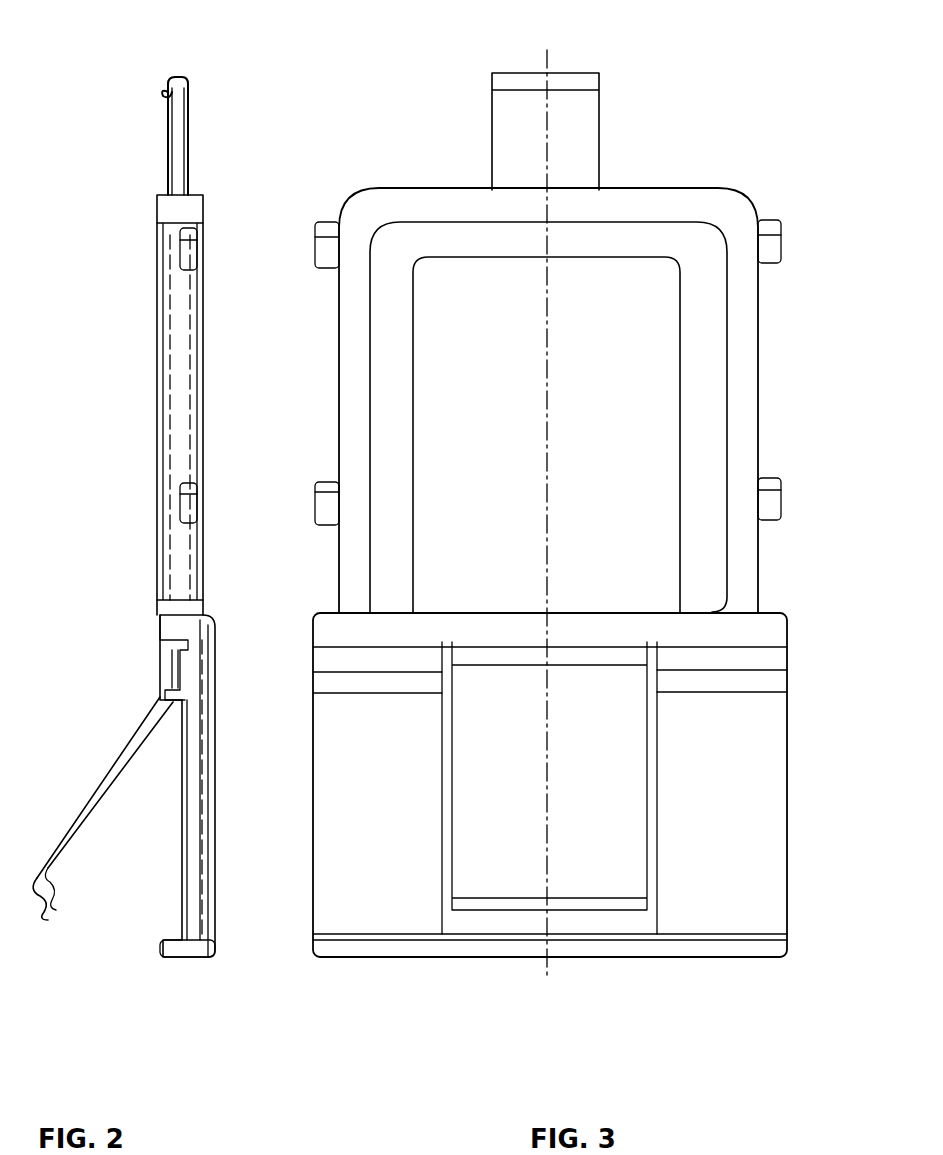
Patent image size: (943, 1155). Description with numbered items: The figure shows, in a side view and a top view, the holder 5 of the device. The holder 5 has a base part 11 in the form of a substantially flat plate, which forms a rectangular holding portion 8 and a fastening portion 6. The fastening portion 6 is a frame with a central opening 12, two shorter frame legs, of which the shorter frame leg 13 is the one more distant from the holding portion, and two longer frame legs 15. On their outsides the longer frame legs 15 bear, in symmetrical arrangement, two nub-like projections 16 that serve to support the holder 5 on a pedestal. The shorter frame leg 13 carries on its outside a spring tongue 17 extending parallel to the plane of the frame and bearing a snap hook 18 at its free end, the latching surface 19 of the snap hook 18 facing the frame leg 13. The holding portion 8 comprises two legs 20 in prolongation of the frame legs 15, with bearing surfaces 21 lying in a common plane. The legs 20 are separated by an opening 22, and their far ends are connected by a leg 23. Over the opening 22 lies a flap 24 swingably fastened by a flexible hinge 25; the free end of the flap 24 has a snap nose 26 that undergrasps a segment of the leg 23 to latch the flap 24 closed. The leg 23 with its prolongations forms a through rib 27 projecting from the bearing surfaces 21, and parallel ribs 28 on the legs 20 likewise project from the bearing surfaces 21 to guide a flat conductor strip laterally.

In FIG. 3, the holder 5 is at (559, 540).
In FIG. 2, the fastening portion 6 is at (157, 366).
In FIG. 3, the fastening portion 6 is at (762, 380).
In FIG. 2, the holding portion 8 is at (216, 890).
In FIG. 3, the holding portion 8 is at (790, 840).
In FIG. 2, the base part 11 is at (203, 572).
In FIG. 3, the base part 11 is at (758, 600).
In FIG. 3, the central opening 12 is at (450, 312).
In FIG. 3, the shorter frame leg 13 is at (647, 200).
In FIG. 3, the longer frame legs 15 is at (360, 382).
In FIG. 2, the nub-like projections 16 is at (182, 246).
In FIG. 3, the nub-like projections 16 is at (315, 240).
In FIG. 2, the spring tongue 17 is at (188, 122).
In FIG. 3, the spring tongue 17 is at (508, 150).
In FIG. 2, the snap hook 18 is at (170, 72).
In FIG. 3, the snap hook 18 is at (527, 72).
In FIG. 2, the latching surface 19 is at (166, 94).
In FIG. 3, the latching surface 19 is at (508, 90).
In FIG. 3, the legs 20 is at (396, 912).
In FIG. 2, the bearing surfaces 21 is at (182, 836).
In FIG. 3, the bearing surfaces 21 is at (340, 824).
In FIG. 3, the opening 22 is at (530, 918).
In FIG. 3, the leg 23 is at (563, 950).
In FIG. 2, the flap 24 is at (98, 760).
In FIG. 3, the flap 24 is at (600, 855).
In FIG. 2, the flexible hinge 25 is at (160, 668).
In FIG. 2, the snap nose 26 is at (42, 920).
In FIG. 3, the snap nose 26 is at (512, 903).
In FIG. 2, the through rib 27 is at (162, 950).
In FIG. 3, the through rib 27 is at (350, 953).
In FIG. 3, the ribs 28 is at (340, 692).